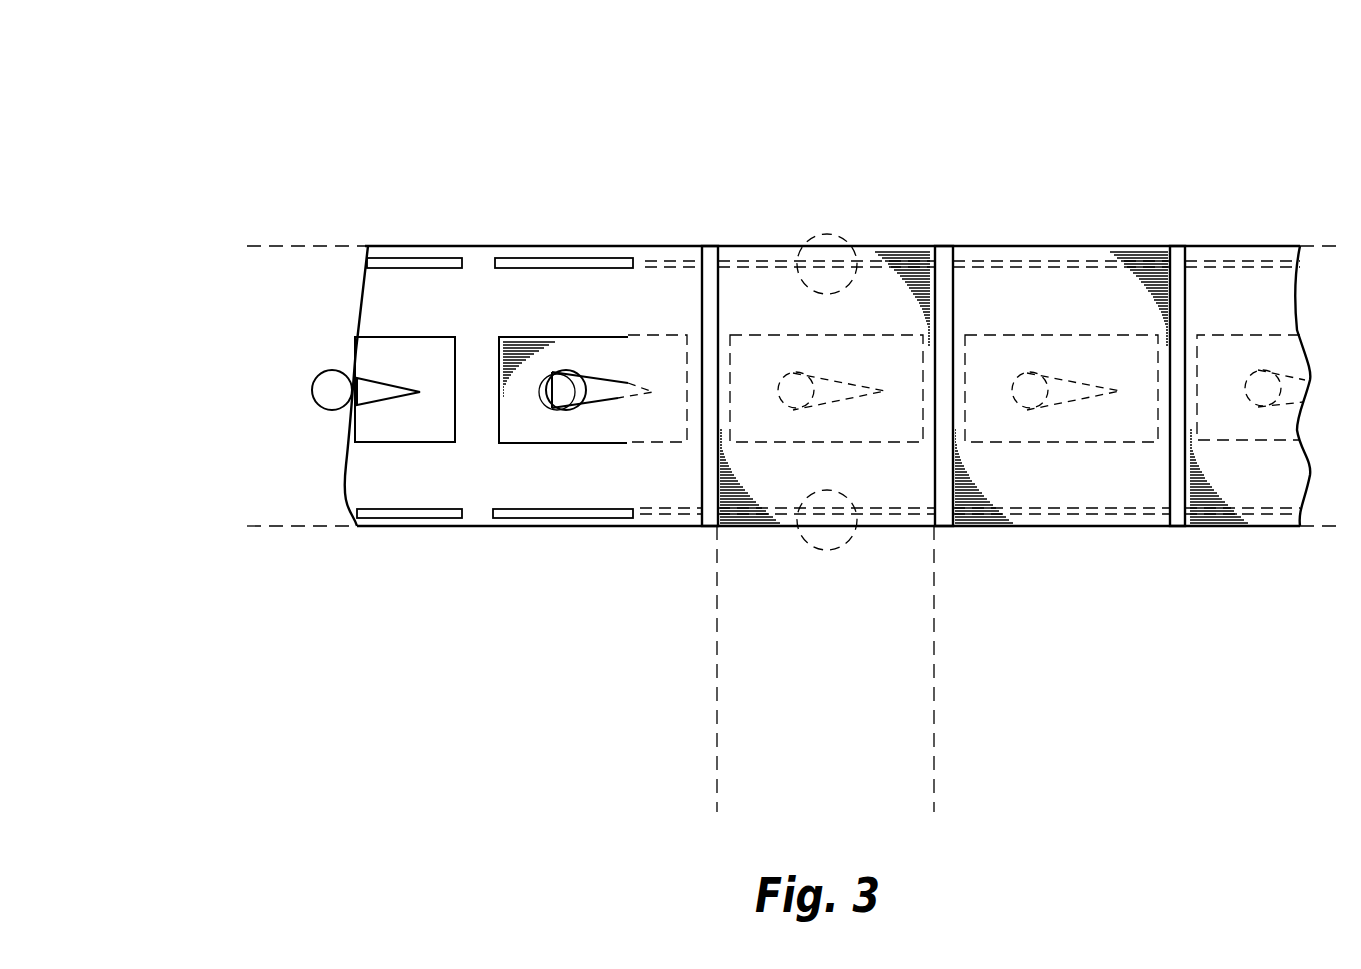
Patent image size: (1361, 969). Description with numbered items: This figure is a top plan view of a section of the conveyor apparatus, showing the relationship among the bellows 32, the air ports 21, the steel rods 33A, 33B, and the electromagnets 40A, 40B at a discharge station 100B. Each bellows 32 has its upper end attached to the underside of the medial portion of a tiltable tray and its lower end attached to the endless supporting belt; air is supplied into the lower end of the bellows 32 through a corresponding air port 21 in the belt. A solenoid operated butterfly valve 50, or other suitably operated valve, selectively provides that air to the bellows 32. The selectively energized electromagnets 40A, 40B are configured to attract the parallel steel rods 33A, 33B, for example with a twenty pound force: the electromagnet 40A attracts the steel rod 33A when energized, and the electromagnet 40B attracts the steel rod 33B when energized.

The bellows 32 is at (867, 335).
The air port 21 is at (597, 393).
The solenoid operated butterfly valve 50 is at (560, 397).
The electromagnet 40A is at (828, 235).
The electromagnet 40B is at (848, 543).
The steel rod 33A is at (1245, 262).
The steel rod 33B is at (1245, 515).
The discharge station 100B is at (825, 669).